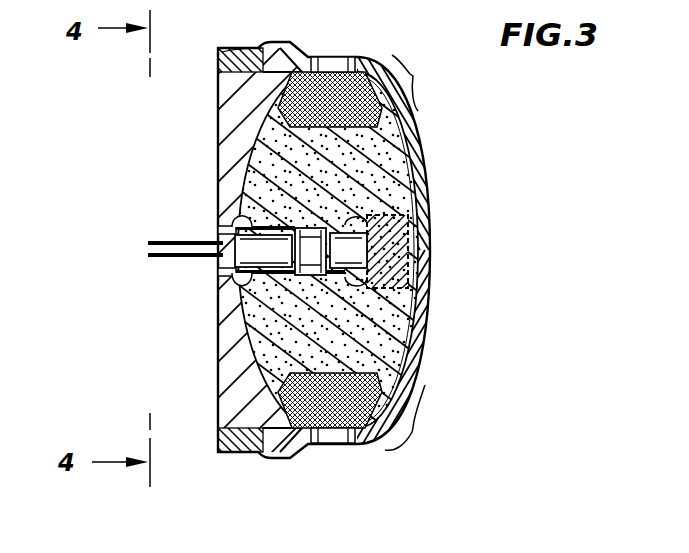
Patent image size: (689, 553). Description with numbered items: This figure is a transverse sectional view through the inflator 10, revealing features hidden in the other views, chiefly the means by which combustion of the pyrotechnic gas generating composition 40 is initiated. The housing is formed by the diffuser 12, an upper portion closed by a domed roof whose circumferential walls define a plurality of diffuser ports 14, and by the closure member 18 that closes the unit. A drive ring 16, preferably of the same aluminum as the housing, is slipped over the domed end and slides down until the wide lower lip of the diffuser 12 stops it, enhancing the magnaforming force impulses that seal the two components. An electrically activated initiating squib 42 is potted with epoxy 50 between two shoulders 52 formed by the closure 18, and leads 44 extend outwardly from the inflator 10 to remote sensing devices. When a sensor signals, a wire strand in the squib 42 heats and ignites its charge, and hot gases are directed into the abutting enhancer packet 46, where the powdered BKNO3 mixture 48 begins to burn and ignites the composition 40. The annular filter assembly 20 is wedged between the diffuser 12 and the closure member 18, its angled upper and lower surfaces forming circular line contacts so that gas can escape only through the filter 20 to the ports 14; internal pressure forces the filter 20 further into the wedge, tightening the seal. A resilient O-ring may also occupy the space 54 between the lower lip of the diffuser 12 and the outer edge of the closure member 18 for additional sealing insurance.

The inflator 10 is at (470, 290).
The diffuser 12 is at (373, 57).
The diffuser ports 14 is at (327, 57).
The drive ring 16 is at (240, 46).
The closure member 18 is at (232, 97).
The annular filter assembly 20 is at (415, 252).
The pyrotechnic gas generating composition 40 is at (388, 147).
The initiating squib 42 is at (240, 338).
The leads 44 is at (150, 243).
The enhancer packet 46 is at (405, 192).
The BKNO3 mixture 48 is at (390, 245).
The epoxy 50 is at (228, 213).
The shoulders 52 is at (232, 203).
The space 54 is at (270, 42).